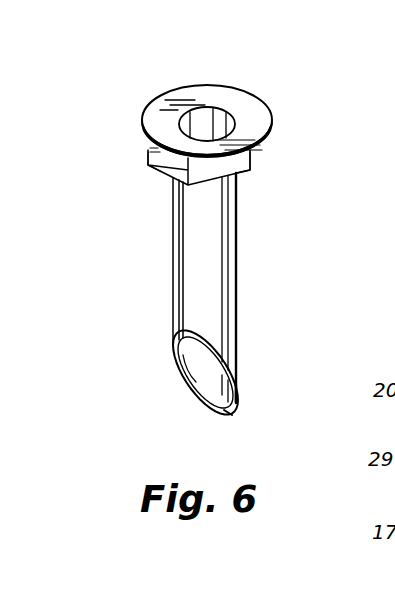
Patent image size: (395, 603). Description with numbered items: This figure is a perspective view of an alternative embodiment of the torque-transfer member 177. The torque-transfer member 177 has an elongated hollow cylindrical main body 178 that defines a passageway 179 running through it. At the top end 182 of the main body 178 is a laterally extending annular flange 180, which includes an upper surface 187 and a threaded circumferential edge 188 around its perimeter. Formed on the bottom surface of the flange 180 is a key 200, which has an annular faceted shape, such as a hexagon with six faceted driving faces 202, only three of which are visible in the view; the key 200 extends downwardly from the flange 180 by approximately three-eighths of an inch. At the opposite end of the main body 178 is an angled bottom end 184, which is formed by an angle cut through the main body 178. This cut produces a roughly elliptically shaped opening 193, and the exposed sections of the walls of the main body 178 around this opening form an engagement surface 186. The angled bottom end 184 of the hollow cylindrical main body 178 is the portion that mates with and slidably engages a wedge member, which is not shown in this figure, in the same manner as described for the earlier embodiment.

The torque-transfer member 177 is at (168, 267).
The elongated hollow cylindrical main body 178 is at (238, 257).
The passageway 179 is at (237, 386).
The annular flange 180 is at (228, 98).
The top end 182 is at (172, 190).
The angled bottom end 184 is at (206, 342).
The engagement surface 186 is at (232, 416).
The upper surface 187 is at (192, 102).
The threaded circumferential edge 188 is at (273, 135).
The elliptically shaped opening 193 is at (195, 382).
The key 200 is at (251, 172).
The faceted driving faces 202 is at (147, 159).